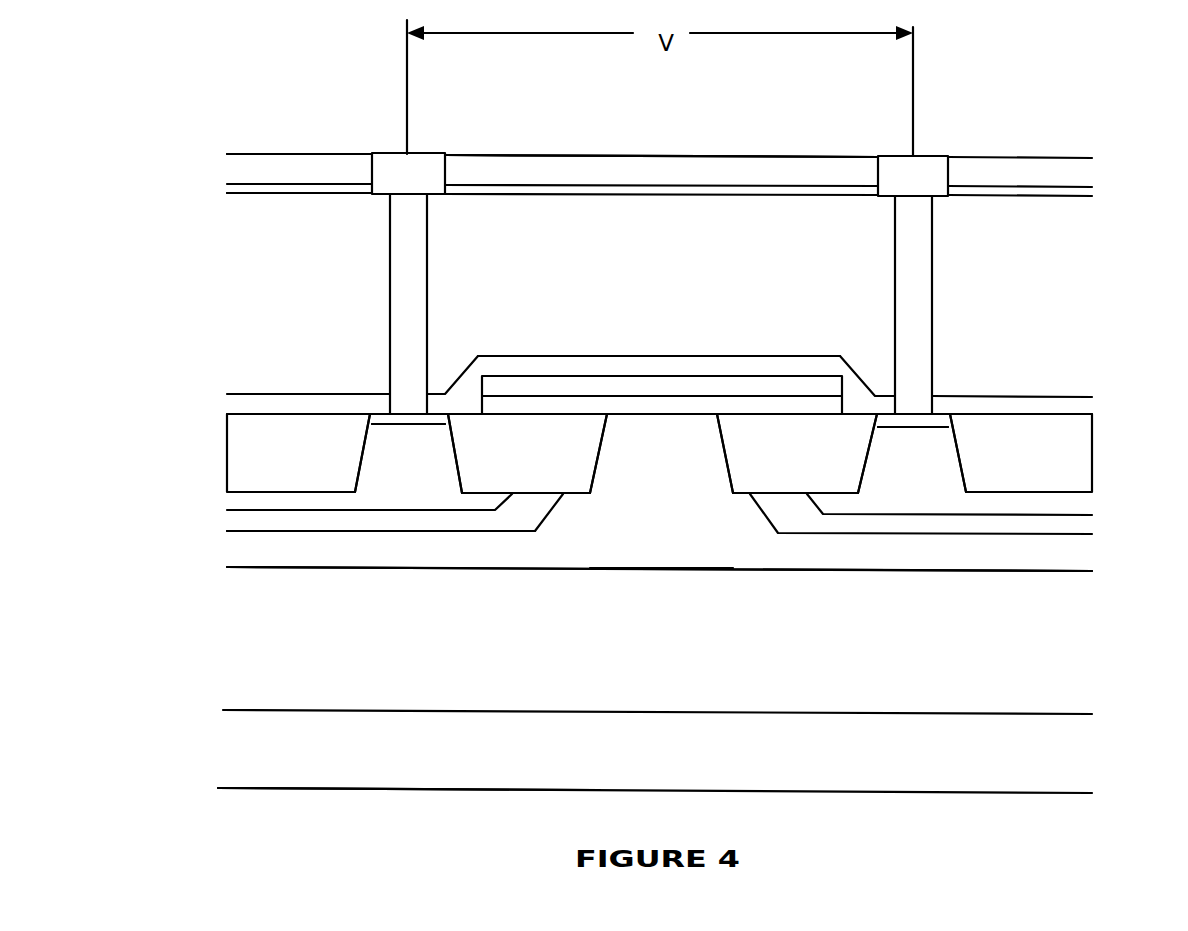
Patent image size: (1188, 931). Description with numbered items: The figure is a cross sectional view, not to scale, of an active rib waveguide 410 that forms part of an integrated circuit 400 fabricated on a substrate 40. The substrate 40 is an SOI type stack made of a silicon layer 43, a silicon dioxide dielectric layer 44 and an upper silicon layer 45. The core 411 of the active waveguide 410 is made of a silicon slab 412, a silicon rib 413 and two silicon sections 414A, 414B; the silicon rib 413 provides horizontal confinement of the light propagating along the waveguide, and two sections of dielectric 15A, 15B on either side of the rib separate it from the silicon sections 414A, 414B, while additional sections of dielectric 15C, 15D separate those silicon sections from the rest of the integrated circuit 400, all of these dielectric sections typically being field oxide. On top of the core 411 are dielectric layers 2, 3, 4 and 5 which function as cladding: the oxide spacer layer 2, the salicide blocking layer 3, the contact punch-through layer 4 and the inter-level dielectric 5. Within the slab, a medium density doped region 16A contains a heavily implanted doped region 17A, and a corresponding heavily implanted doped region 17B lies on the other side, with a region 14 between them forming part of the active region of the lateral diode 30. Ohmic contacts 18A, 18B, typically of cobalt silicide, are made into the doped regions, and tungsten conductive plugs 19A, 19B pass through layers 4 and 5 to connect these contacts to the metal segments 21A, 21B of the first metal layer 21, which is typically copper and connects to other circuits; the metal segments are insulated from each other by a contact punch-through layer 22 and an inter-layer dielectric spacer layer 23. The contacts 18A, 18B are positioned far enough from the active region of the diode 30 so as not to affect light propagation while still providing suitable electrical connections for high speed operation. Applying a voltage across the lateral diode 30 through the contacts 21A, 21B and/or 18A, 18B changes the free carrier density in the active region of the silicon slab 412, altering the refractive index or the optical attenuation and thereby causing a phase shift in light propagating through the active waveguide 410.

The oxide spacer layer 2 is at (715, 407).
The salicide blocking layer 3 is at (715, 388).
The contact punch-through layer 4 is at (570, 368).
The inter-level dielectric 5 is at (221, 234).
The region 14 is at (578, 542).
The section of dielectric 15A is at (500, 466).
The section of dielectric 15B is at (768, 465).
The section of dielectric 15C is at (305, 462).
The section of dielectric 15D is at (999, 468).
The doped region 16A is at (415, 522).
The doped region 17A is at (382, 483).
The doped region 17B is at (917, 480).
The ohmic contact 18A is at (382, 422).
The ohmic contact 18B is at (935, 423).
The conductive plug 19A is at (413, 248).
The conductive plug 19B is at (917, 250).
The first metal layer 21 is at (255, 132).
The metal segment 21A is at (408, 173).
The metal segment 21B is at (913, 176).
The contact punch-through layer 22 is at (204, 186).
The inter-layer dielectric spacer layer 23 is at (204, 164).
The lateral diode 30 is at (658, 133).
The substrate 40 is at (208, 599).
The silicon layer 43 is at (285, 767).
The dielectric layer 44 is at (285, 687).
The silicon layer 45 is at (208, 542).
The integrated circuit 400 is at (292, 803).
The active waveguide 410 is at (658, 590).
The core 411 is at (657, 337).
The silicon slab 412 is at (643, 536).
The silicon rib 413 is at (682, 470).
The silicon section 414A is at (408, 453).
The silicon section 414B is at (912, 453).